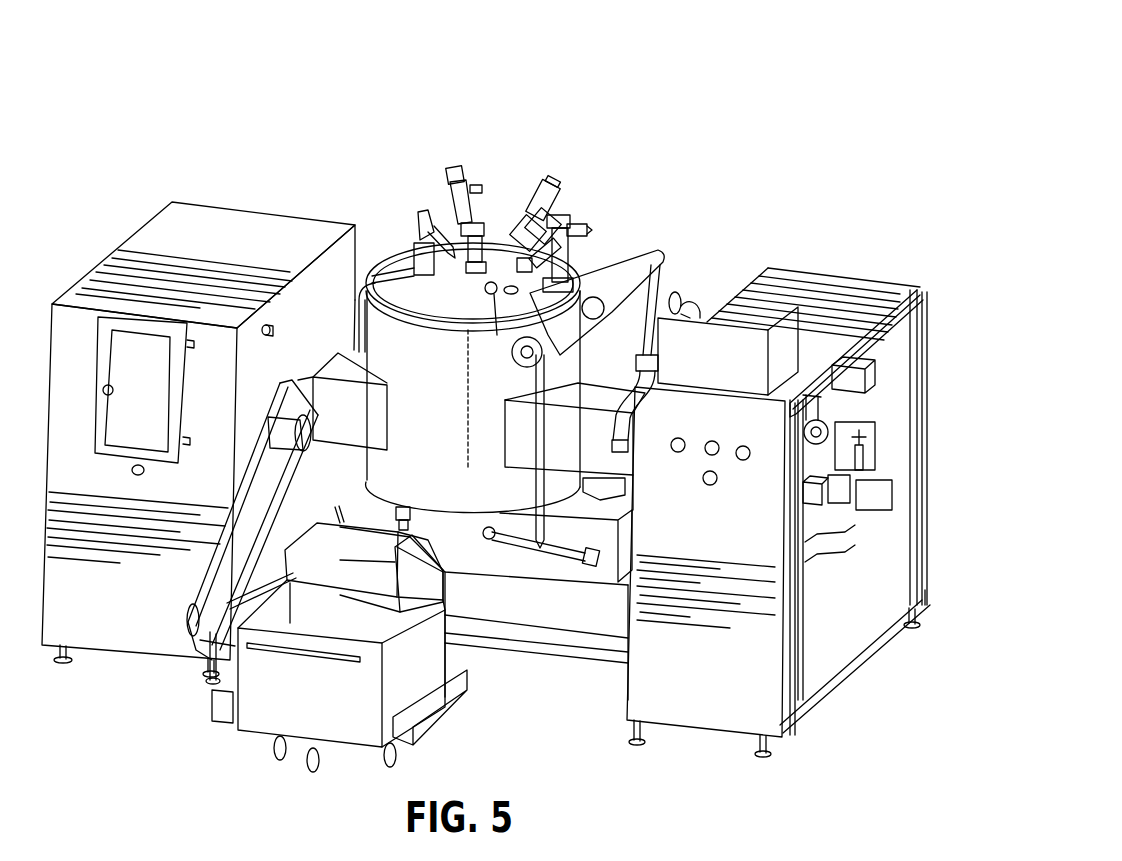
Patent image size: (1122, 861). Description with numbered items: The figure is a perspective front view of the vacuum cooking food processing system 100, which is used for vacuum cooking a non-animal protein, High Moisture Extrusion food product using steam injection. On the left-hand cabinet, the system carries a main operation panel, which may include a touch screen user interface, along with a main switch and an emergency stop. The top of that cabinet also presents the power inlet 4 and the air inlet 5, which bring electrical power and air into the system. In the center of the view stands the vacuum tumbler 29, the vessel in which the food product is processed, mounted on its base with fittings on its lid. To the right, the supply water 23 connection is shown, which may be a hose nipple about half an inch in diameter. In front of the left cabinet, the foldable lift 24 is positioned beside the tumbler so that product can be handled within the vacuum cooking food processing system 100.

The vacuum cooking food processing system 100 is at (740, 104).
The power inlet 4 is at (305, 235).
The air inlet 5 is at (273, 232).
The supply water 23 is at (705, 318).
The foldable lift 24 is at (213, 698).
The vacuum tumbler 29 is at (496, 535).